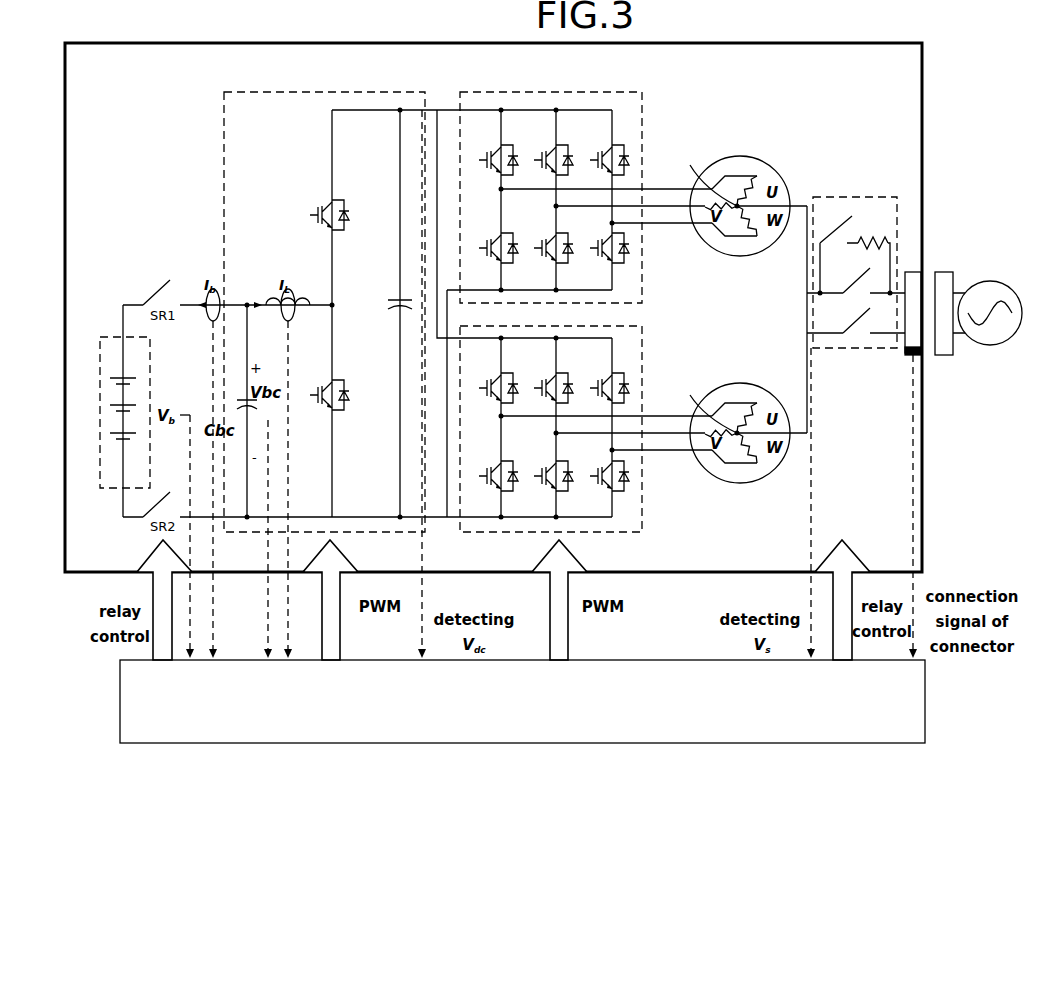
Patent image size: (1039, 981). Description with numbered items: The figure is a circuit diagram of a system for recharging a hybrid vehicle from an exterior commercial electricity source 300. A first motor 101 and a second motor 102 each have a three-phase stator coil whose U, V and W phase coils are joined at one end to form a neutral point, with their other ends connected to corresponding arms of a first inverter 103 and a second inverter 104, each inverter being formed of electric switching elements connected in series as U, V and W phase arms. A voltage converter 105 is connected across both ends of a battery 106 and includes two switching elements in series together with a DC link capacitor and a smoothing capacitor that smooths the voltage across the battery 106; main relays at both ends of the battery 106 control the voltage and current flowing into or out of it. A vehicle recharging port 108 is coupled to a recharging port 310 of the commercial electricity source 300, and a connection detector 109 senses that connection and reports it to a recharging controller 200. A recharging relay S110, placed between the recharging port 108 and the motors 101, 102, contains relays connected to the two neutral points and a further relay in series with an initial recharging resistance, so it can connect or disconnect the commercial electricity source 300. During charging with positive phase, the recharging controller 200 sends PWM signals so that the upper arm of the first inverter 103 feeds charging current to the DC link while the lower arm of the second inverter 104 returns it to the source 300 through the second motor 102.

The first motor 101 is at (746, 156).
The second motor 102 is at (740, 483).
The first inverter 103 is at (548, 92).
The second inverter 104 is at (565, 533).
The voltage converter 105 is at (338, 92).
The battery 106 is at (108, 337).
The recharging port 108 is at (912, 271).
The connection detector 109 is at (924, 364).
The recharging controller 200 is at (926, 700).
The commercial electricity source 300 is at (994, 281).
The recharging port 310 is at (953, 355).
The recharging relay S110 is at (862, 197).